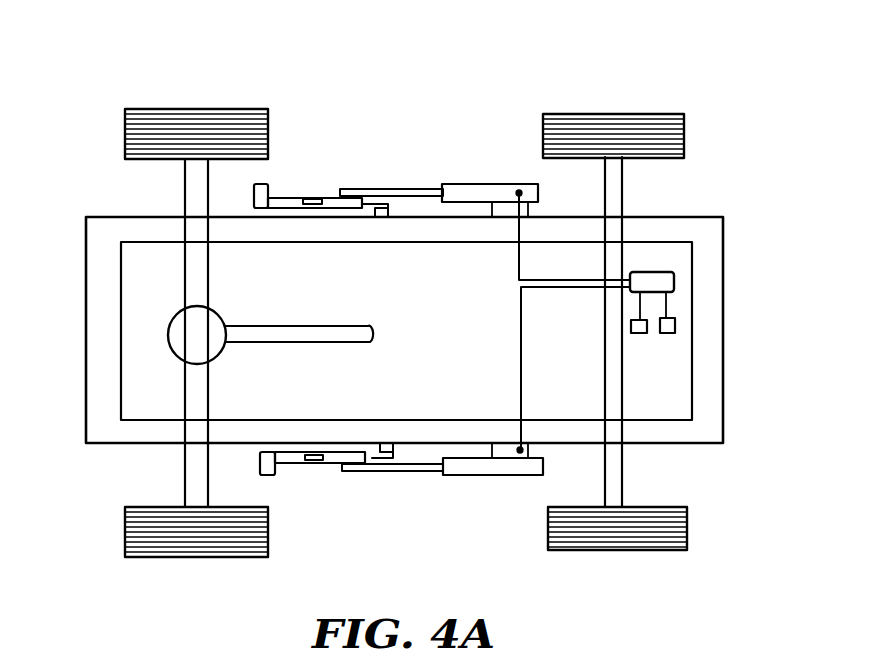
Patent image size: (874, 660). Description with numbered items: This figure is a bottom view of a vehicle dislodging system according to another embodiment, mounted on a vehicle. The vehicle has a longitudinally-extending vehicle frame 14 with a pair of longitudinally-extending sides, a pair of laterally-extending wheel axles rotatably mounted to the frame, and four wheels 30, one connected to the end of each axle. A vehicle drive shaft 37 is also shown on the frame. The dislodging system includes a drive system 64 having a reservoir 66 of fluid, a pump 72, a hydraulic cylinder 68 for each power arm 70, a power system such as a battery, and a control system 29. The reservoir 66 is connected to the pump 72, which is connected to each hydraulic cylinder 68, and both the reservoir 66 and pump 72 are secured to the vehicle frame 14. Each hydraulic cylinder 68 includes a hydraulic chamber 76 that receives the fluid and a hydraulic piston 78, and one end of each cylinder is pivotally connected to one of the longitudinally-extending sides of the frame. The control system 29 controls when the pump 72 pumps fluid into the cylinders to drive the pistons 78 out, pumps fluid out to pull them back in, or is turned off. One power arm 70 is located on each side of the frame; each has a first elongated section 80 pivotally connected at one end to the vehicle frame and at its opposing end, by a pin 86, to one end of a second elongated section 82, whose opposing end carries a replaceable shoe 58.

The vehicle frame 14 is at (86, 352).
The control system 29 is at (676, 326).
The wheels 30 is at (125, 108).
The vehicle drive shaft 37 is at (305, 334).
The replaceable shoe 58 is at (268, 187).
The drive system 64 is at (496, 309).
The reservoir 66 is at (641, 333).
The hydraulic cylinder 68 is at (497, 185).
The power arm 70 is at (392, 324).
The pump 72 is at (660, 283).
The hydraulic chamber 76 is at (455, 184).
The hydraulic piston 78 is at (411, 188).
The first elongated section 80 is at (328, 194).
The second elongated section 82 is at (285, 208).
The pin 86 is at (313, 204).